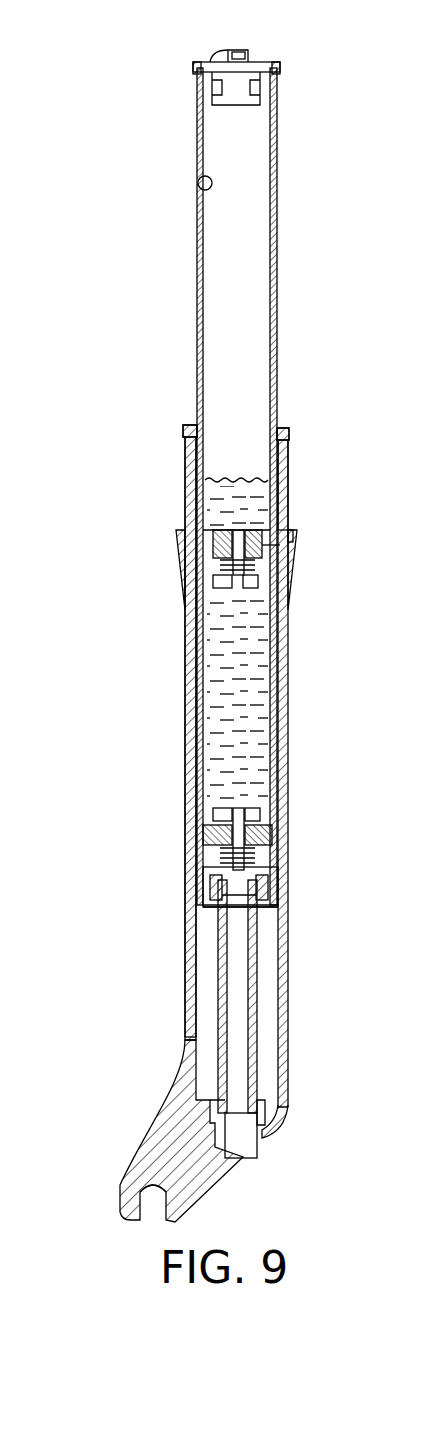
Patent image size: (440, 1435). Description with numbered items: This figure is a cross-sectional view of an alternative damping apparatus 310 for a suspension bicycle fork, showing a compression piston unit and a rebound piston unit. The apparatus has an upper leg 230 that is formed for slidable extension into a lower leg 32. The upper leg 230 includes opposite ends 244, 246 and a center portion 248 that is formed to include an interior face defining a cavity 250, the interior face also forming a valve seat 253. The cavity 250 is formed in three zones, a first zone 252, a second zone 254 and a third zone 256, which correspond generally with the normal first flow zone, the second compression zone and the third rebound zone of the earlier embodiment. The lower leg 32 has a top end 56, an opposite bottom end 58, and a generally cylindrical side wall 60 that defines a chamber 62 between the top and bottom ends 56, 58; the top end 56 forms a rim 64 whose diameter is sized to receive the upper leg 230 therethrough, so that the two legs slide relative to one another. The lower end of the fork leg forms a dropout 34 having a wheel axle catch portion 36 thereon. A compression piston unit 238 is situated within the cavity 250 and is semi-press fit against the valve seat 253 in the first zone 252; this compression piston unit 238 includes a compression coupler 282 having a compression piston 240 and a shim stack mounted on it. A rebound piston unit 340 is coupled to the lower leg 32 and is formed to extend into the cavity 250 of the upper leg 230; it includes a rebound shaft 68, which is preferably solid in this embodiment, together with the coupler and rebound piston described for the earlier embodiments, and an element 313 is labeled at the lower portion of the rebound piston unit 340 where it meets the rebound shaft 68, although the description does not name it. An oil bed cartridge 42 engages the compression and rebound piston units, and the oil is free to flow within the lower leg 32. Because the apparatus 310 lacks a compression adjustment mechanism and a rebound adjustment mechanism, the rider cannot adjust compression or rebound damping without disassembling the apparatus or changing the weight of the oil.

The upper leg 230 is at (277, 228).
The end 244 is at (280, 68).
The cavity 250 is at (214, 128).
The first zone 252 is at (200, 193).
The damping apparatus 310 is at (126, 234).
The second zone 254 is at (232, 264).
The center portion 248 is at (197, 343).
The lower leg 32 is at (288, 657).
The top end 56 is at (290, 443).
The side wall 60 is at (186, 734).
The chamber 62 is at (195, 430).
The rim 64 is at (288, 428).
The oil bed cartridge 42 is at (233, 717).
The compression coupler 282 is at (268, 522).
The compression piston 240 is at (290, 542).
The compression piston unit 238 is at (276, 548).
The valve seat 253 is at (213, 562).
The rebound piston unit 340 is at (186, 800).
The third zone 256 is at (203, 850).
The end 246 is at (285, 890).
The end plate 313 is at (203, 907).
The rebound shaft 68 is at (257, 968).
The dropout 34 is at (160, 1092).
The wheel axle catch portion 36 is at (130, 1200).
The bottom end 58 is at (262, 1140).